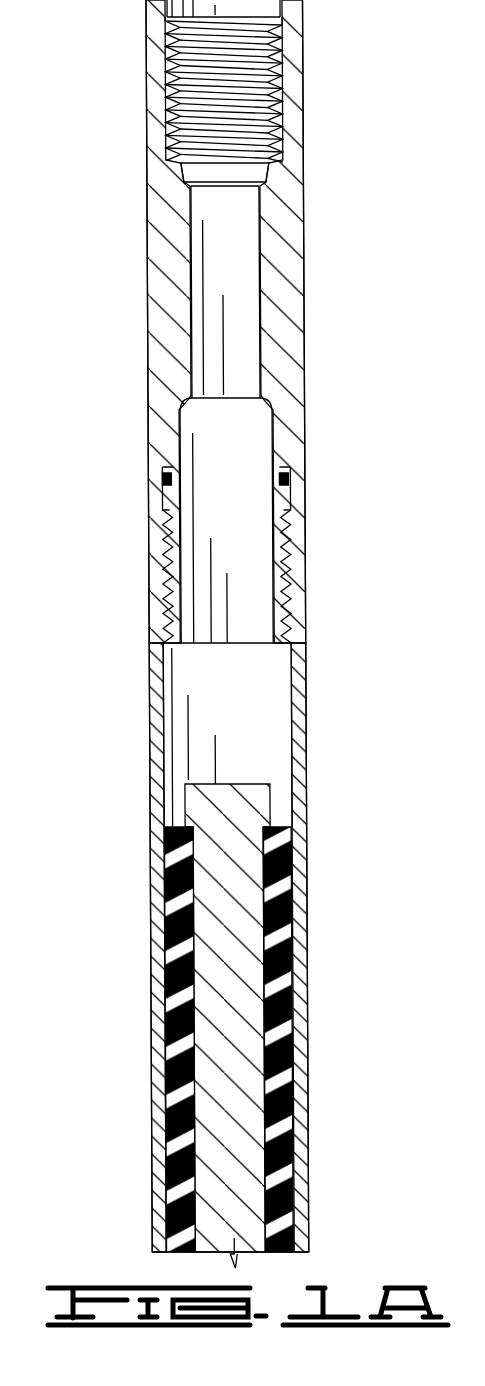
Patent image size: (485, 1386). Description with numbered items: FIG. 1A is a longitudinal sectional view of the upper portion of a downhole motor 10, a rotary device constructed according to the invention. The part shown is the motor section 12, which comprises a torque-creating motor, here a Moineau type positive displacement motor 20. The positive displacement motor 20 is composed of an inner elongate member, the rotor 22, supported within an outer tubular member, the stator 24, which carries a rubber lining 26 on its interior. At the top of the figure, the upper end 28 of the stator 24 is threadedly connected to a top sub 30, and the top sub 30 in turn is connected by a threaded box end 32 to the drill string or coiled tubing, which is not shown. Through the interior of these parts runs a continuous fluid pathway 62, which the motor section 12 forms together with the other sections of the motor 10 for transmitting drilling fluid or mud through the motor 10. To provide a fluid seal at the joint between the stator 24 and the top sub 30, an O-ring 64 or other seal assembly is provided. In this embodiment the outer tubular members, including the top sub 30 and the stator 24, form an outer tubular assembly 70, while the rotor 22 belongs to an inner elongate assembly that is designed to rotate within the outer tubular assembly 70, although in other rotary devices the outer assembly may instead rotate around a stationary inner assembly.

The downhole motor 10 is at (122, 98).
The motor section 12 is at (303, 1008).
The positive displacement motor 20 is at (303, 932).
The rotor 22 is at (222, 1028).
The stator 24 is at (304, 755).
The rubber lining 26 is at (288, 877).
The upper end of the stator 28 is at (294, 572).
The top sub 30 is at (282, 253).
The threaded box end 32 is at (288, 79).
The fluid pathway 62 is at (241, 465).
The O-ring 64 is at (164, 482).
The outer tubular assembly 70 is at (304, 1195).